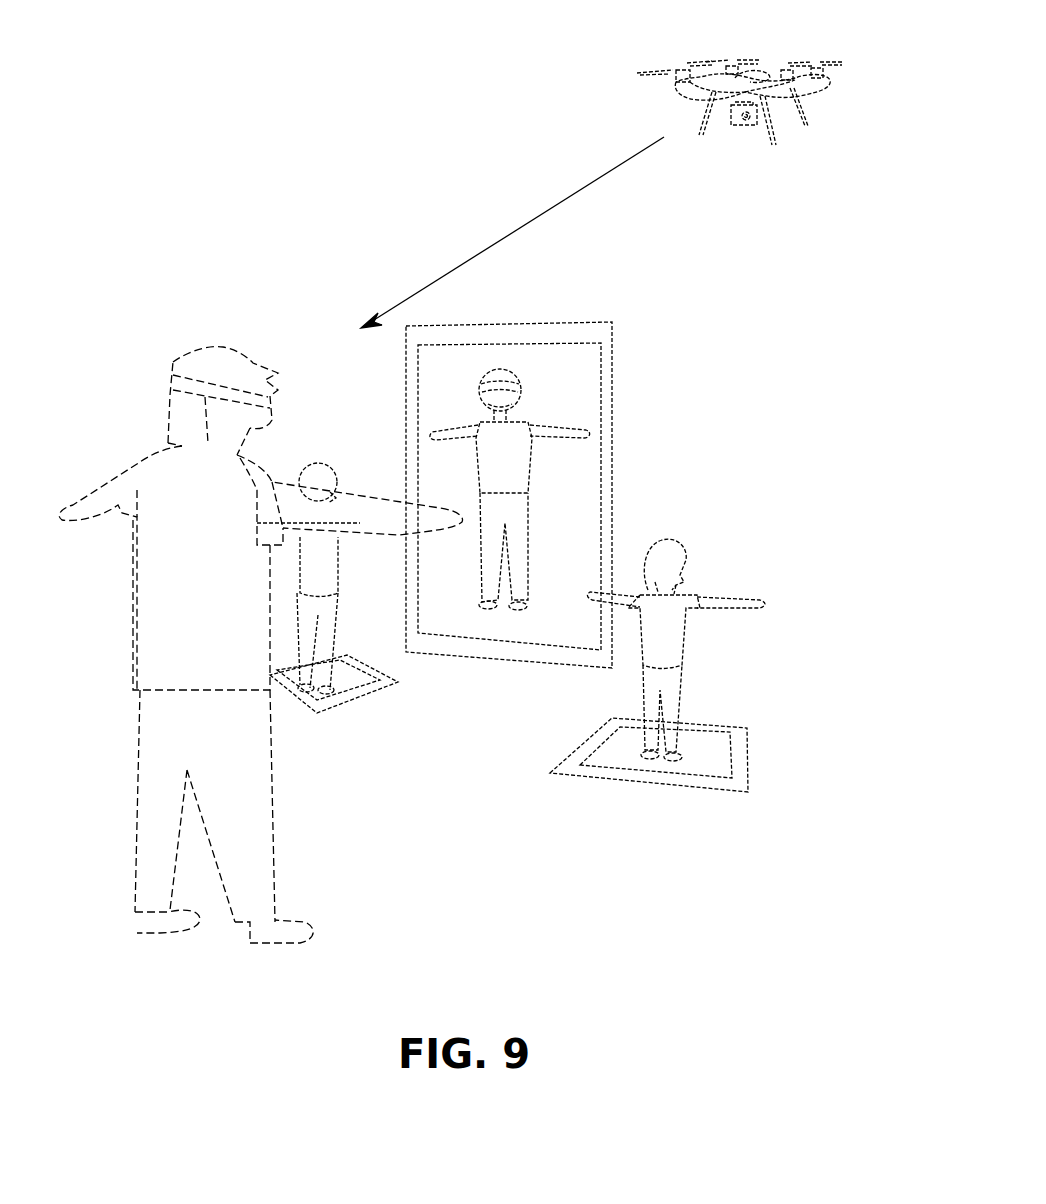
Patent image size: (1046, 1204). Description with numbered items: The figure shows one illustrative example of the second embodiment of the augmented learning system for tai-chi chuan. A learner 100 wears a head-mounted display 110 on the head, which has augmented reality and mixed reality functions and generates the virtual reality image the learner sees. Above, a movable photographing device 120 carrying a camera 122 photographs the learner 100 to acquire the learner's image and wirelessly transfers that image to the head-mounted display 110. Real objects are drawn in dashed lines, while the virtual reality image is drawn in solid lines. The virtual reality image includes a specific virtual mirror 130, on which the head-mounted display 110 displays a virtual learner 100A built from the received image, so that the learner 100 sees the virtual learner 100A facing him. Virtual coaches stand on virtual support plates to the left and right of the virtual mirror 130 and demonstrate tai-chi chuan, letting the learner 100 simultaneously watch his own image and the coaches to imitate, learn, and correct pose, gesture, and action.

The tai-chi chuan learner 100 is at (140, 597).
The virtual learner 100A is at (520, 462).
The head-mounted display 110 is at (243, 370).
The movable photographing device 120 is at (766, 68).
The camera 122 is at (737, 127).
The virtual mirror 130 is at (612, 347).